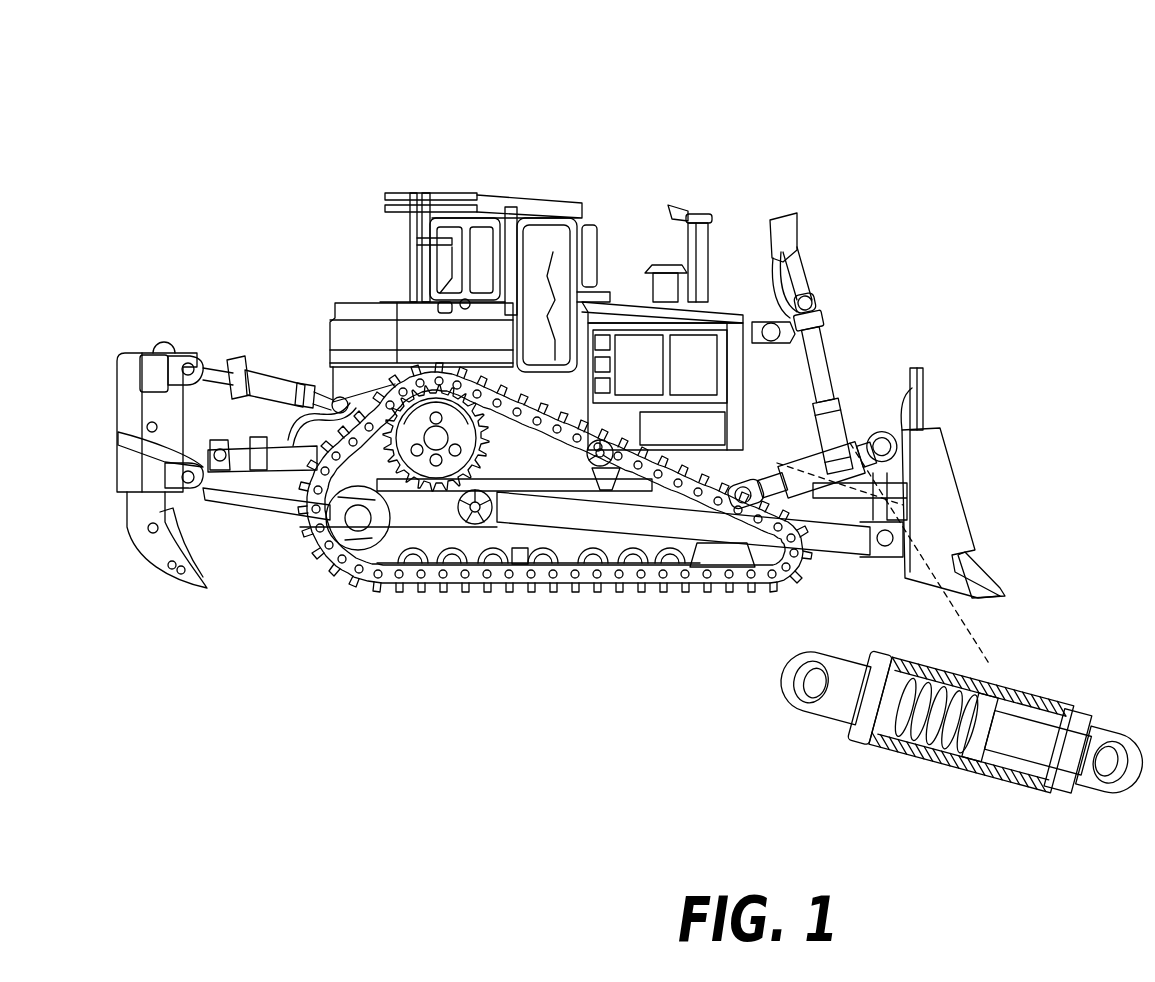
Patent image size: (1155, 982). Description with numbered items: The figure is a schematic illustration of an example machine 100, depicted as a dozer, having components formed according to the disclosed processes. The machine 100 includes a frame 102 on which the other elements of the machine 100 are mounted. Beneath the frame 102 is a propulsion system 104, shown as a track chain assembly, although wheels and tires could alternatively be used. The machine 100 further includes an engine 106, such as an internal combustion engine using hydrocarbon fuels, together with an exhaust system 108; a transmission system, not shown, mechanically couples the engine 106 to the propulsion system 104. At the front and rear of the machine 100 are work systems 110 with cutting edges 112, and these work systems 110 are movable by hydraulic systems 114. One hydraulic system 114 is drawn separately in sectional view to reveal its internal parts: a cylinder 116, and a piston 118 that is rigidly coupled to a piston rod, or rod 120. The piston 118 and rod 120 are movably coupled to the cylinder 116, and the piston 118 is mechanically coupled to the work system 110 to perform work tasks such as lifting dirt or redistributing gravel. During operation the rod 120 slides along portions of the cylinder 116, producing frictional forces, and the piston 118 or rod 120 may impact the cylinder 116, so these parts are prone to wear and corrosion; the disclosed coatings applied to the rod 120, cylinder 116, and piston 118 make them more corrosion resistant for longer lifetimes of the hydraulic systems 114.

The machine 100 is at (598, 108).
The frame 102 is at (367, 311).
The propulsion system 104 is at (644, 591).
The engine 106 is at (627, 340).
The exhaust system 108 is at (705, 216).
The work system 110 is at (140, 370).
The cutting edge 112 is at (194, 592).
The hydraulic system 114 is at (233, 355).
The cylinder 116 is at (975, 770).
The piston 118 is at (905, 742).
The rod 120 is at (972, 723).